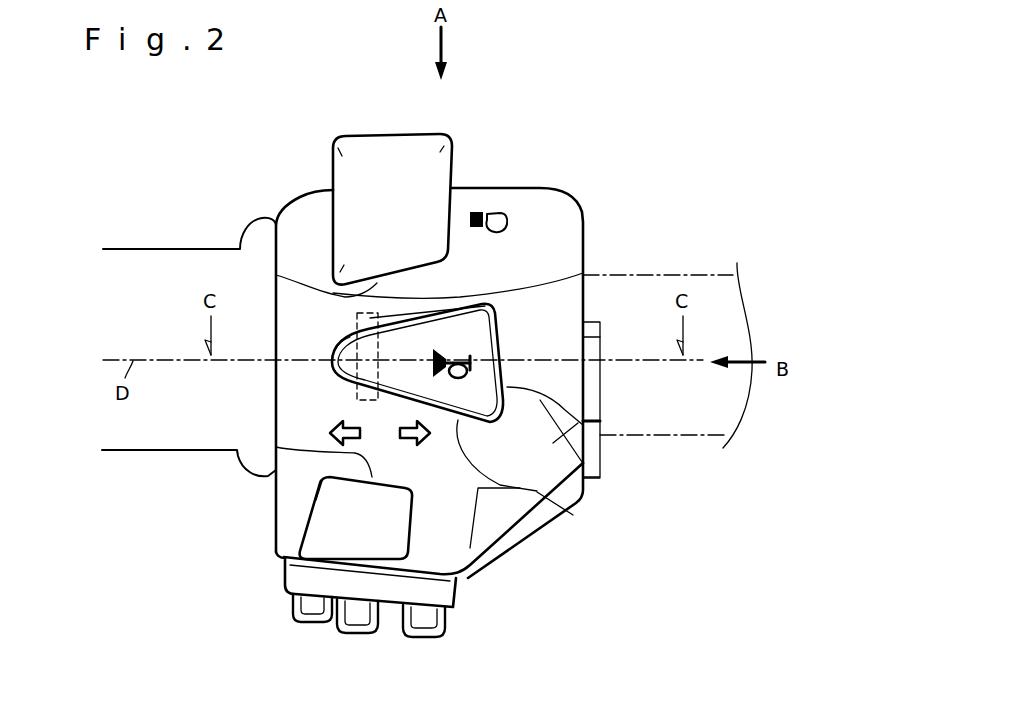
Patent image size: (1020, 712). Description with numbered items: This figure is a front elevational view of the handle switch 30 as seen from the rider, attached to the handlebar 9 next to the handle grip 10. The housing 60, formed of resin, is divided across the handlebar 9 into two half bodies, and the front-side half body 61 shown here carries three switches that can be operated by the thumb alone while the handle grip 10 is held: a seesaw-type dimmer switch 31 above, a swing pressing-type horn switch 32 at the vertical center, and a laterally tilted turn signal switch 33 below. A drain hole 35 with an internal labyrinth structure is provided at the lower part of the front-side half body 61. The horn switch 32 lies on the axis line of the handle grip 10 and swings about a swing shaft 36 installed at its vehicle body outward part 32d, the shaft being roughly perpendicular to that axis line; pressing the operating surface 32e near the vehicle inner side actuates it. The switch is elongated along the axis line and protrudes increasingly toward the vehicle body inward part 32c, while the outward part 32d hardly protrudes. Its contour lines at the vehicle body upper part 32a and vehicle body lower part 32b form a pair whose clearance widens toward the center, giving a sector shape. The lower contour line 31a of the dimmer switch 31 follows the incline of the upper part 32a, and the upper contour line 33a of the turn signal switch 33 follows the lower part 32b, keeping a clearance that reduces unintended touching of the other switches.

The handlebar 9 is at (702, 438).
The handle grip 10 is at (133, 453).
The handle switch 30 is at (660, 136).
The dimmer switch 31 is at (388, 130).
The lower contour line 31a is at (300, 280).
The horn switch 32 is at (505, 328).
The vehicle body upper part 32a is at (447, 300).
The vehicle body lower part 32b is at (537, 492).
The vehicle body inward part 32c is at (587, 423).
The vehicle body outward part 32d is at (332, 361).
The operating surface 32e is at (583, 478).
The turn signal switch 33 is at (310, 518).
The upper contour line 33a is at (300, 450).
The drain hole 35 is at (315, 622).
The swing shaft 36 is at (357, 400).
The housing 60 is at (297, 200).
The front-side half body 61 is at (290, 238).